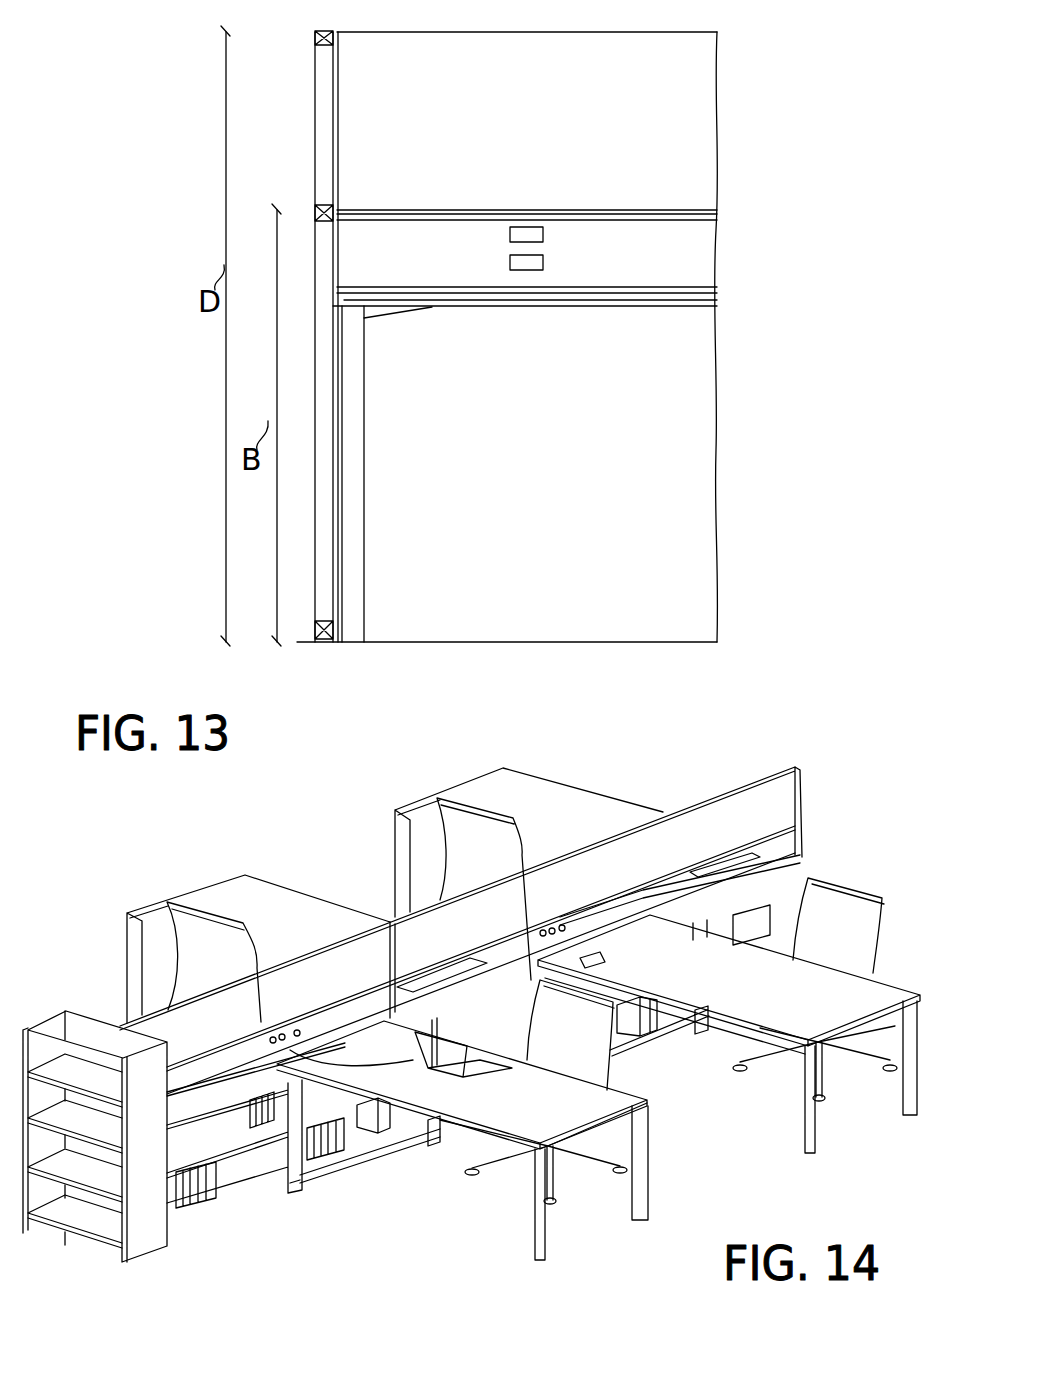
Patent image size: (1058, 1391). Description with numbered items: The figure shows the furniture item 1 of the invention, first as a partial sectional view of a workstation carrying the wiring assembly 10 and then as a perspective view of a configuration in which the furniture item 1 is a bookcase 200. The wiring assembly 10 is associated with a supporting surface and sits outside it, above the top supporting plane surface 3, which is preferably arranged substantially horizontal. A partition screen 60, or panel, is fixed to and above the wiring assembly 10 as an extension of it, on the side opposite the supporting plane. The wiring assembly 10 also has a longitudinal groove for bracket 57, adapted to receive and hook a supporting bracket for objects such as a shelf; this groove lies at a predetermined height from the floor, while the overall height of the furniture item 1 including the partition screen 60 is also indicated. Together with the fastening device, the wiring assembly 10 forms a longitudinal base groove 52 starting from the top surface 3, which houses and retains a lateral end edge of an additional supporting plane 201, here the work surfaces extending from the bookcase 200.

In FIG. 14, the furniture item 1 is at (478, 985).
In FIG. 13, the top supporting plane surface 3 is at (688, 283).
In FIG. 14, the wiring assembly 10 is at (827, 818).
In FIG. 14, the longitudinal base groove 52 is at (217, 1094).
In FIG. 13, the groove for bracket 57 is at (680, 205).
In FIG. 13, the partition screen 60 is at (693, 92).
In FIG. 14, the partition screen 60 is at (625, 857).
In FIG. 14, the bookcase 200 is at (293, 1220).
In FIG. 14, the additional supporting plane 201 is at (428, 1137).